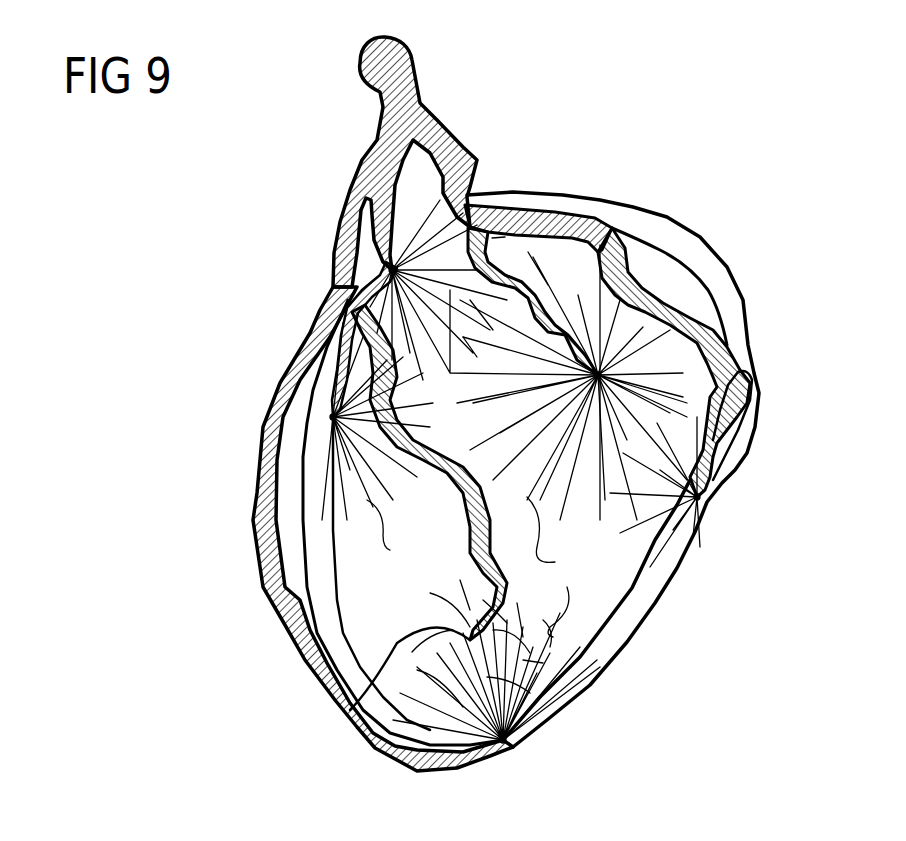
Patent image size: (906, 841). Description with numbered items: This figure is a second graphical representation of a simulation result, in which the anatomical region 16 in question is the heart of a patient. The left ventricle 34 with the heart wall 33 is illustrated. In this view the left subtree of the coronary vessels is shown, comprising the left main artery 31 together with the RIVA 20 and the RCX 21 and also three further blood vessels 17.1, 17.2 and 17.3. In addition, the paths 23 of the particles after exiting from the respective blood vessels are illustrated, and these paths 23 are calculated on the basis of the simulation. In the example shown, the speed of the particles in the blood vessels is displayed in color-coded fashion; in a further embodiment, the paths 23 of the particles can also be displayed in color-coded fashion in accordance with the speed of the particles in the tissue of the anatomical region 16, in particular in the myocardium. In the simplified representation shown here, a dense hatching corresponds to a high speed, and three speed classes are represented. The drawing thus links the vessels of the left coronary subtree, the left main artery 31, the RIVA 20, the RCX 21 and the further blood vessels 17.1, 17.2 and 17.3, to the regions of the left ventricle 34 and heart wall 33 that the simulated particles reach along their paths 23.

The anatomical region 16 is at (217, 240).
The first blood vessel 17.1 is at (345, 712).
The second blood vessel 17.2 is at (542, 305).
The third blood vessel 17.3 is at (350, 210).
The RIVA 20 is at (283, 603).
The RCX 21 is at (600, 245).
The paths 23 is at (345, 275).
The left main artery 31 is at (412, 57).
The heart wall 33 is at (673, 240).
The left ventricle 34 is at (587, 615).